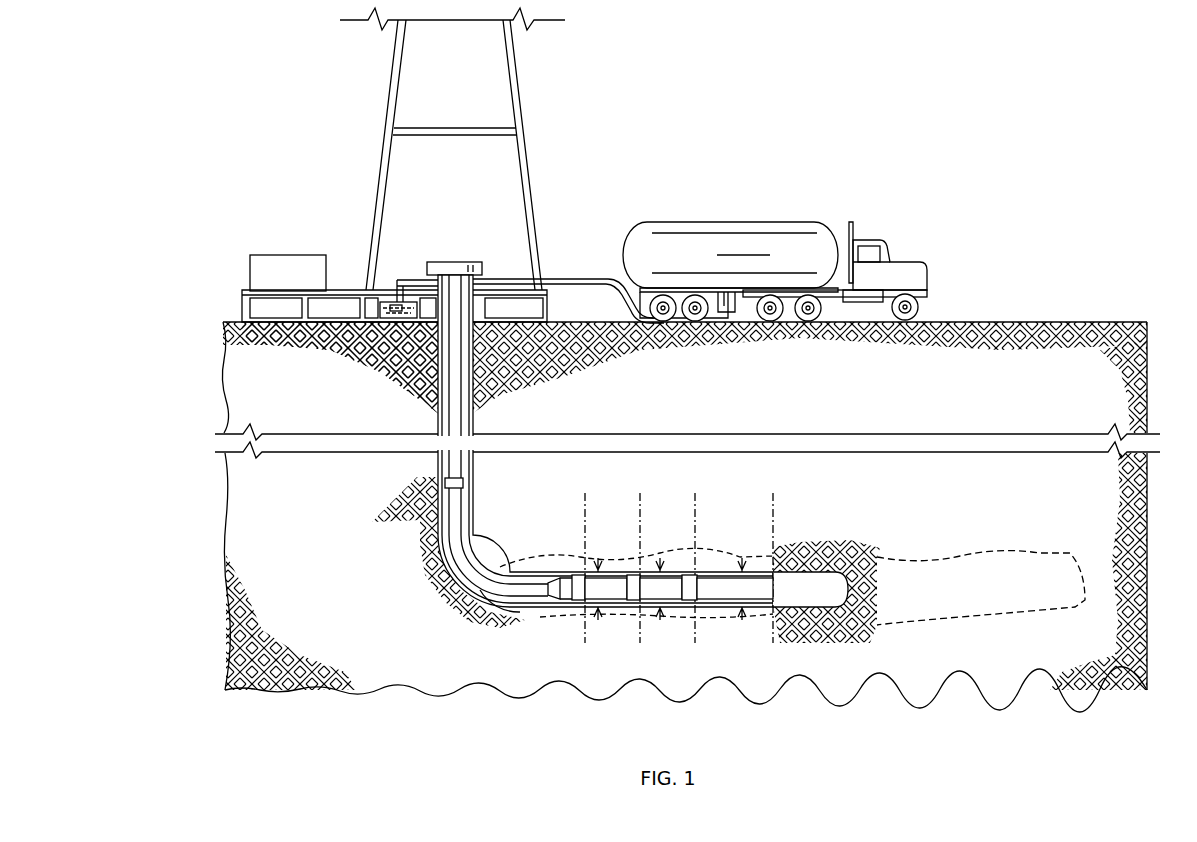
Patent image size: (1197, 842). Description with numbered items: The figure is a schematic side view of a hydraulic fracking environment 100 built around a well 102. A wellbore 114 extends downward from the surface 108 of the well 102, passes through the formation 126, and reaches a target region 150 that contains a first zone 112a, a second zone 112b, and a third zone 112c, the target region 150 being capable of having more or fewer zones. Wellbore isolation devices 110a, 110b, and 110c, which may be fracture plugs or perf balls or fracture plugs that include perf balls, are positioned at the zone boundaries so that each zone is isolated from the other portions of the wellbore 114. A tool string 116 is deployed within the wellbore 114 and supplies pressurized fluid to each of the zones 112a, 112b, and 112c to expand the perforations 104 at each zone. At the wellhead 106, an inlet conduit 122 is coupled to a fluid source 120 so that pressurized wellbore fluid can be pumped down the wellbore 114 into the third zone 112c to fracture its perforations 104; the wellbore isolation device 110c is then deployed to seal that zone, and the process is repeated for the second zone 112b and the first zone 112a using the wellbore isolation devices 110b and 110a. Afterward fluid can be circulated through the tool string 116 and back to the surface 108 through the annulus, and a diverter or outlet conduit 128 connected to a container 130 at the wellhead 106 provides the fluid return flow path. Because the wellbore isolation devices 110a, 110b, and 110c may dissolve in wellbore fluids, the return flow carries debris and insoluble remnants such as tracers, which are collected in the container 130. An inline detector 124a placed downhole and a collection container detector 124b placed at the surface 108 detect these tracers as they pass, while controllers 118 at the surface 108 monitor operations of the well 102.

The hydraulic fracking environment 100 is at (330, 140).
The well 102 is at (476, 253).
The perforations 104 is at (595, 560).
The wellhead 106 is at (456, 262).
The surface 108 is at (965, 320).
The wellbore isolation device 110a is at (575, 608).
The wellbore isolation device 110b is at (616, 572).
The wellbore isolation device 110c is at (700, 572).
The first zone 112a is at (580, 498).
The second zone 112b is at (644, 498).
The third zone 112c is at (700, 498).
The wellbore 114 is at (474, 520).
The tool string 116 is at (504, 612).
The controllers 118 is at (288, 253).
The fluid source 120 is at (864, 240).
The inlet conduit 122 is at (580, 278).
The inline detector 124a is at (472, 494).
The collection container detector 124b is at (390, 305).
The formation 126 is at (349, 626).
The outlet conduit 128 is at (408, 280).
The container 130 is at (375, 345).
The target region 150 is at (897, 557).